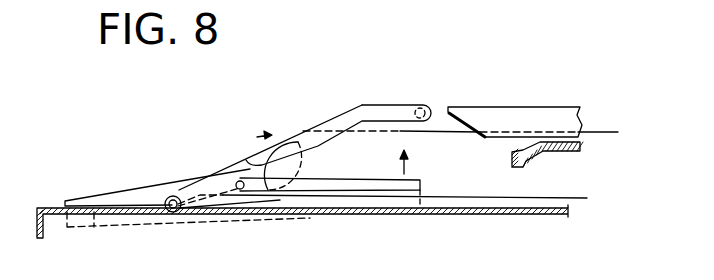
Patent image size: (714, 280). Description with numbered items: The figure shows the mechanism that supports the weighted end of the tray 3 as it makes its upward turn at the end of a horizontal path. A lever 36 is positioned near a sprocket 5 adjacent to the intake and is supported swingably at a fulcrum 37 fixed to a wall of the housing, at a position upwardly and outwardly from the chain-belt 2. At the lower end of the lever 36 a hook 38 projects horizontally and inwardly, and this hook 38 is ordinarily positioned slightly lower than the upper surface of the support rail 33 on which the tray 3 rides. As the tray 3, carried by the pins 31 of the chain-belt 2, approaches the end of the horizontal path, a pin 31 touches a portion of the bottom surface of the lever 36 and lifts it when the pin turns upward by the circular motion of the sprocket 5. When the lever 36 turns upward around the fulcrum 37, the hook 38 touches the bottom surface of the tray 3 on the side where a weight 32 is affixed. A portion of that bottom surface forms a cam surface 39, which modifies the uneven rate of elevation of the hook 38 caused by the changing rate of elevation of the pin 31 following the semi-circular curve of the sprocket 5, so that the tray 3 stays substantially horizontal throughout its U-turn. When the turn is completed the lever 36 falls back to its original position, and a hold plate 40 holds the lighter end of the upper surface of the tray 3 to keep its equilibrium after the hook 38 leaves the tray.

The chain-belt 2 is at (287, 128).
The tray 3 is at (117, 192).
The sprocket 5 is at (243, 143).
The pin 31 is at (241, 190).
The weight 32 is at (83, 219).
The support rail 33 is at (498, 217).
The lever 36 is at (213, 175).
The fulcrum 37 is at (419, 108).
The hook 38 is at (173, 210).
The cam surface 39 is at (258, 166).
The hold plate 40 is at (500, 107).